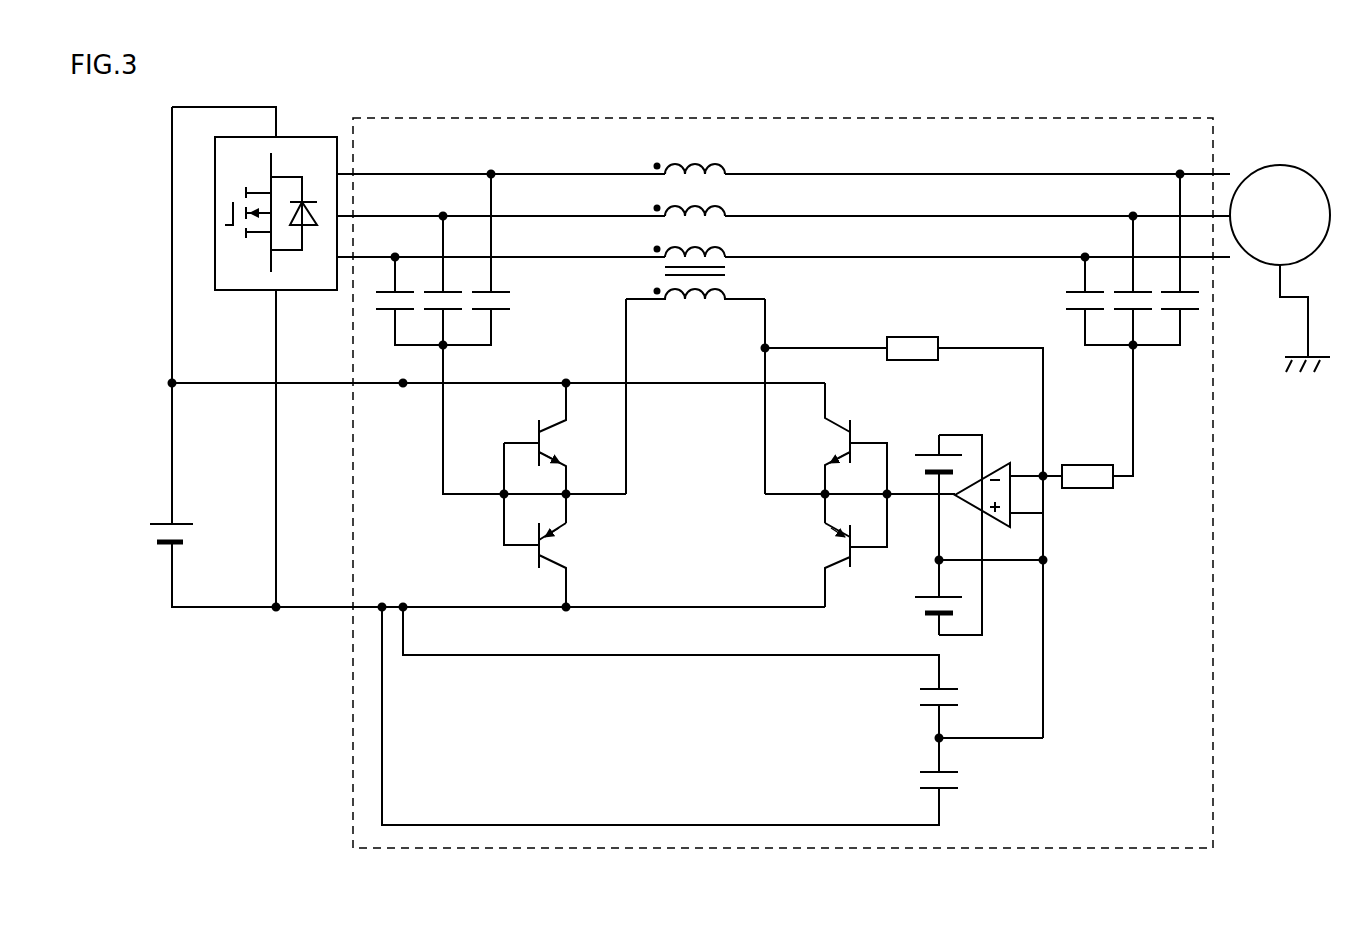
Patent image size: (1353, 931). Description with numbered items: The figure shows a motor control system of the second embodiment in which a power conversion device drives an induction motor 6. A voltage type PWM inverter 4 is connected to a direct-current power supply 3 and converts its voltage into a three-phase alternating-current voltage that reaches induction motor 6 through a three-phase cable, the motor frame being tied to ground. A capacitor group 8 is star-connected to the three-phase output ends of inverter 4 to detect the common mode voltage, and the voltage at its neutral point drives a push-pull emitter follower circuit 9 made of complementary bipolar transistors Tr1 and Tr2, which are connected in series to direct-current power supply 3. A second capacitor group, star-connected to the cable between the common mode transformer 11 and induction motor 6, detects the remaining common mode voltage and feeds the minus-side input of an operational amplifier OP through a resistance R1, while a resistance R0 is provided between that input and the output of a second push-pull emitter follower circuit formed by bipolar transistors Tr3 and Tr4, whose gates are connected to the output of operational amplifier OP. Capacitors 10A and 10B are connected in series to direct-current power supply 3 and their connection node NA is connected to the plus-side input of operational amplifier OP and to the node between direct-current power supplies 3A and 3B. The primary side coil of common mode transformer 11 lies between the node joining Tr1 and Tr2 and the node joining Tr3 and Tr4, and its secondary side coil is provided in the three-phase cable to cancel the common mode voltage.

The direct-current power supply 3 is at (183, 522).
The direct-current power supply 3A is at (930, 452).
The direct-current power supply 3B is at (930, 595).
The voltage type PWM inverter 4 is at (305, 137).
The induction motor 6 is at (1310, 178).
The capacitor group 8 is at (388, 318).
The push-pull emitter follower circuit 9 is at (545, 495).
The capacitor 10A is at (915, 695).
The capacitor 10B is at (915, 782).
The common mode transformer 11 is at (742, 283).
The bipolar transistor Tr1 is at (552, 440).
The bipolar transistor Tr2 is at (552, 544).
The bipolar transistor Tr3 is at (840, 440).
The bipolar transistor Tr4 is at (840, 544).
The resistance R0 is at (917, 335).
The resistance R1 is at (1075, 465).
The operational amplifier OP is at (990, 470).
The connection node NA is at (1046, 620).